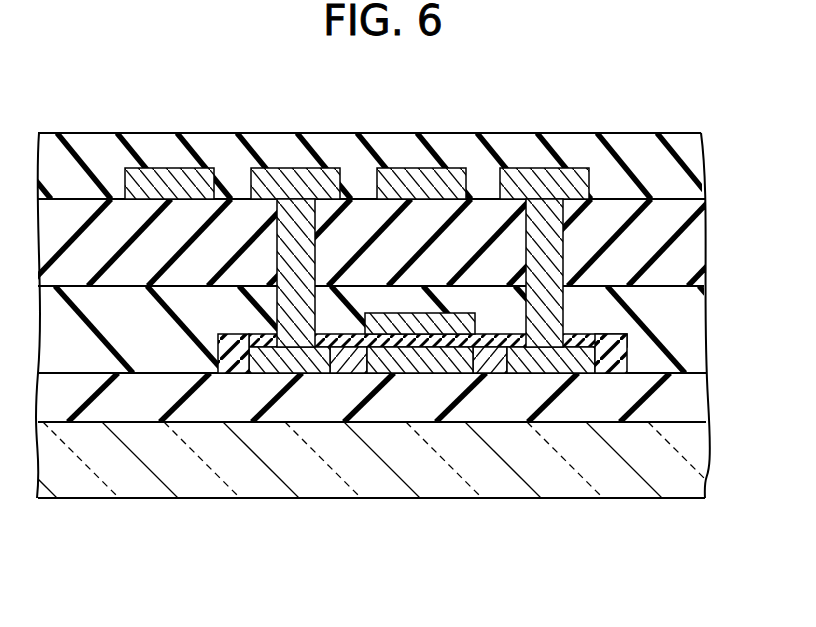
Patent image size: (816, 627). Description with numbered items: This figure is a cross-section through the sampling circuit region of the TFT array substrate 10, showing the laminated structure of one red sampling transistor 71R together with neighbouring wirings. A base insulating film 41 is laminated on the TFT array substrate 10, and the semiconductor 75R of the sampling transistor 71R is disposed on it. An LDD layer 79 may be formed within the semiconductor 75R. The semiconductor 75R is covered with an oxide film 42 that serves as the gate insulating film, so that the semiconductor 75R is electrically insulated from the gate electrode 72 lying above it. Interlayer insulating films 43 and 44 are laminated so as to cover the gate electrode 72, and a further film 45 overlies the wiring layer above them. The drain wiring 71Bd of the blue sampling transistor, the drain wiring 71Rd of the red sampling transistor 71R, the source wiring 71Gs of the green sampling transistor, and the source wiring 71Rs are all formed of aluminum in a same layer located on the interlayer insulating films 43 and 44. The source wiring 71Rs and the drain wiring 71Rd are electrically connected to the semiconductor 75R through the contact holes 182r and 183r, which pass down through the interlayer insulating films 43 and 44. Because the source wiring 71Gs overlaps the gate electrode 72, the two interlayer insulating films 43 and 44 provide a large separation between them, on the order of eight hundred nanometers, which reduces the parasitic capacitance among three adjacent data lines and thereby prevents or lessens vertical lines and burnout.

The upper insulating layer 45 is at (682, 168).
The interlayer insulating film 44 is at (682, 255).
The interlayer insulating film 43 is at (682, 330).
The base insulating film 41 is at (682, 398).
The TFT array substrate 10 is at (690, 452).
The drain wiring 71Bd is at (172, 173).
The drain wiring 71Rd is at (297, 173).
The source wiring 71Gs is at (425, 173).
The source wiring 71Rs is at (548, 173).
The contact hole 183r is at (312, 268).
The contact hole 182r is at (558, 262).
The sampling transistor 71R is at (438, 457).
The gate electrode 72 is at (412, 327).
The LDD layer 79 is at (484, 366).
The semiconductor 75R is at (545, 367).
The oxide film 42 is at (233, 357).